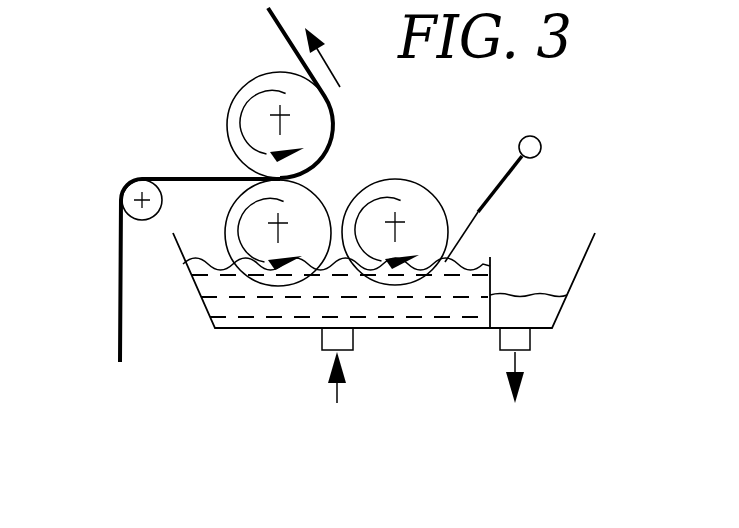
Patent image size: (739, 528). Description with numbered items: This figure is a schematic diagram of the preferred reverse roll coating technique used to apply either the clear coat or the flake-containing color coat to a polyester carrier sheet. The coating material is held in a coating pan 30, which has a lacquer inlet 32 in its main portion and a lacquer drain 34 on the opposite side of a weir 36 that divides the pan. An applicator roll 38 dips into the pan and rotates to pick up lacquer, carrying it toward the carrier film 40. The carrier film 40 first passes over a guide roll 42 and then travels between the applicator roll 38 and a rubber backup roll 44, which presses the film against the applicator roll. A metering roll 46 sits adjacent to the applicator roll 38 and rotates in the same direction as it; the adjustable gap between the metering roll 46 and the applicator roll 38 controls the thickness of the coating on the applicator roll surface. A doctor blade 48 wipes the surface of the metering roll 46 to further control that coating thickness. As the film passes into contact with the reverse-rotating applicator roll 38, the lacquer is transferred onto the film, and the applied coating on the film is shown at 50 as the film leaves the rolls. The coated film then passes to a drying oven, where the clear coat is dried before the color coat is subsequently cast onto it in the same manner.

The coating pan 30 is at (572, 287).
The lacquer inlet 32 is at (353, 338).
The lacquer drain 34 is at (530, 338).
The weir 36 is at (490, 257).
The applicator roll 38 is at (320, 193).
The carrier film 40 is at (120, 285).
The guide roll 42 is at (125, 187).
The rubber backup roll 44 is at (227, 128).
The metering roll 46 is at (390, 180).
The doctor blade 48 is at (462, 242).
The applied coating 50 is at (282, 25).